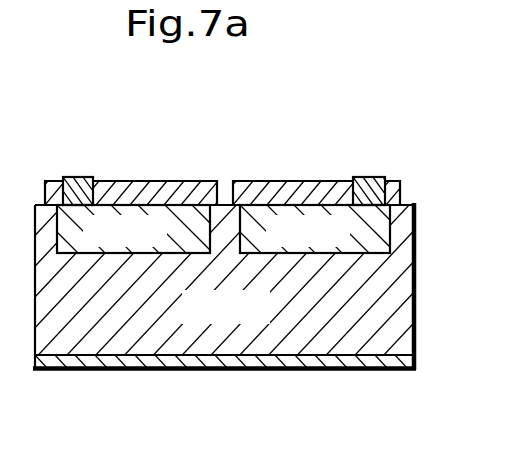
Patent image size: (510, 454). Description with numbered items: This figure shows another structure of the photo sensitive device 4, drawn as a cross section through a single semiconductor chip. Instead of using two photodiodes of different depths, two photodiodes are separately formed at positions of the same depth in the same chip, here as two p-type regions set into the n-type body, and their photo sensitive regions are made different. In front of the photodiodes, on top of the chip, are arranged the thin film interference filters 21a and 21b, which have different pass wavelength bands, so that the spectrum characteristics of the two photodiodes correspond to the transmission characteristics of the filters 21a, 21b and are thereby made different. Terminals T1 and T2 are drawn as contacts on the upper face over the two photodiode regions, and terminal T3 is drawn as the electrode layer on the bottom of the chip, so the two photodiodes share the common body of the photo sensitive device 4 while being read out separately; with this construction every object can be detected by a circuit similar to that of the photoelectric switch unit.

The photo sensitive device 4 is at (437, 242).
The thin film interference filter 21a is at (178, 181).
The thin film interference filter 21b is at (302, 185).
The first terminal electrode T1 is at (73, 176).
The second terminal electrode T2 is at (377, 176).
The third (bottom) terminal electrode T3 is at (310, 371).